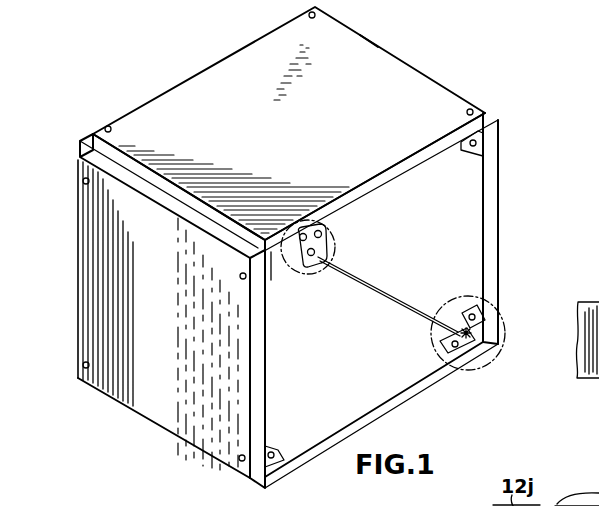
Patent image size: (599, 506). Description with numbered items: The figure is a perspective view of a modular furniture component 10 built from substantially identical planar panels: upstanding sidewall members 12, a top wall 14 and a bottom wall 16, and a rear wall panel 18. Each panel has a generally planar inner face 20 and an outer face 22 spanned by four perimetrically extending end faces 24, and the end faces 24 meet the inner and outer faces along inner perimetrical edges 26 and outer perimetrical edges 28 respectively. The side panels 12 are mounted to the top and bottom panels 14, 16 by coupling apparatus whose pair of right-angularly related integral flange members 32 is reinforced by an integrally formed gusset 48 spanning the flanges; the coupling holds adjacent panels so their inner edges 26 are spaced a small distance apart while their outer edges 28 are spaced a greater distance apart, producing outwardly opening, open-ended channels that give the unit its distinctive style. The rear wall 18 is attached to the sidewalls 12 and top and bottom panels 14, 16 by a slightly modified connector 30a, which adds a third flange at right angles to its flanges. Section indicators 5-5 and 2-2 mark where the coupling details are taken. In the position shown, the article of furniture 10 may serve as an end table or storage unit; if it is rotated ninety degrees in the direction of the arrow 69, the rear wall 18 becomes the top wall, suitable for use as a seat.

The modular furniture component 10 is at (441, 54).
The sidewall members 12 is at (499, 214).
The top wall 14 is at (443, 88).
The bottom wall 16 is at (398, 400).
The rear wall panel 18 is at (90, 135).
The inner face 20 is at (472, 190).
The outer face 22 is at (376, 52).
The end faces 24 is at (492, 111).
The inner perimetrical edges 26 is at (384, 188).
The outer perimetrical edges 28 is at (372, 172).
The modified connector 30a is at (311, 274).
The flange members 32 is at (452, 306).
The gusset 48 is at (497, 338).
The section line 5-5 is at (337, 244).
The section line 2-2 is at (432, 336).
The arrow 69 is at (86, 452).